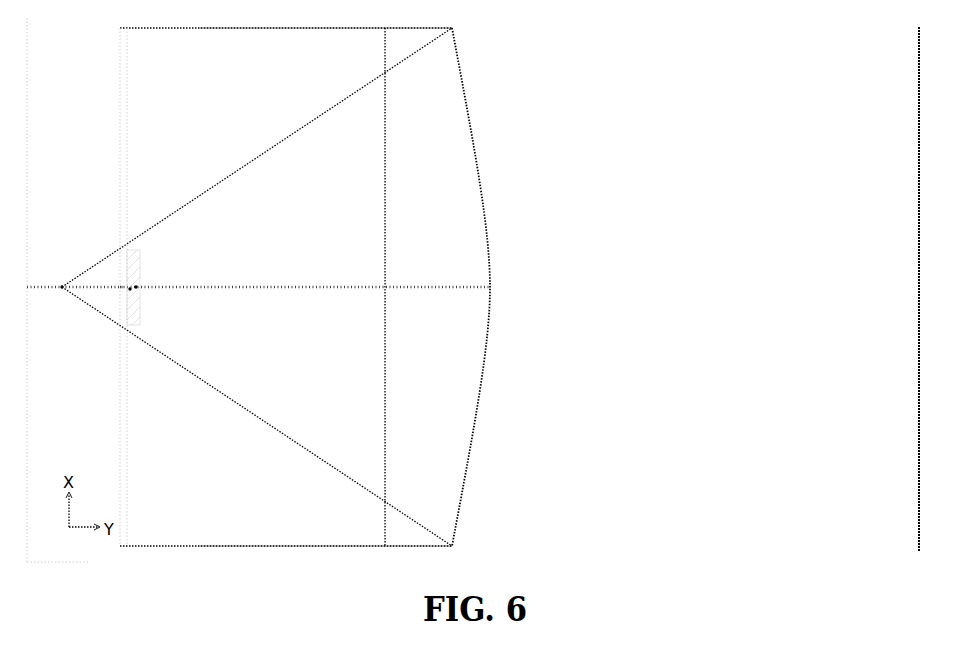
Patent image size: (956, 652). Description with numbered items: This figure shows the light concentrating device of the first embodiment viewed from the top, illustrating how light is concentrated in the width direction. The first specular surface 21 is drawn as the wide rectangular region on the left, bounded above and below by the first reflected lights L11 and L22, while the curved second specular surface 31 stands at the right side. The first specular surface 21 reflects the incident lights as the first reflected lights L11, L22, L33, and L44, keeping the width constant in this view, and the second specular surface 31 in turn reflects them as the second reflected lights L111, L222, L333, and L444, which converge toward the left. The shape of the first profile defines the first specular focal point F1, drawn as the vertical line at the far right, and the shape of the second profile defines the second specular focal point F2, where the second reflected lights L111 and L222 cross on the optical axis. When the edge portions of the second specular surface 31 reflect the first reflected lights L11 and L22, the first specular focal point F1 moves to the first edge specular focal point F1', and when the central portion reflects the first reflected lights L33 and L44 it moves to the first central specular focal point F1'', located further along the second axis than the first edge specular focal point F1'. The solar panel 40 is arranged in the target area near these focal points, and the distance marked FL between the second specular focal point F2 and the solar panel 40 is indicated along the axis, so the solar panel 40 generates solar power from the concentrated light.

The first specular surface 21 is at (259, 536).
The second specular surface 31 is at (486, 221).
The solar panel 40 is at (123, 238).
The first reflected light L11 is at (397, 30).
The first reflected light L22 is at (397, 544).
The first reflected light L33 is at (320, 290).
The first reflected light L44 is at (430, 285).
The second reflected light L111 is at (247, 162).
The second reflected light L222 is at (296, 441).
The second reflected light L333 is at (130, 290).
The second reflected light L444 is at (134, 286).
The first specular focal point F1 is at (903, 289).
The first edge specular focal point F1' is at (58, 290).
The first central specular focal point F1'' is at (161, 275).
The second specular focal point F2 is at (62, 285).
The focal length FL is at (110, 281).